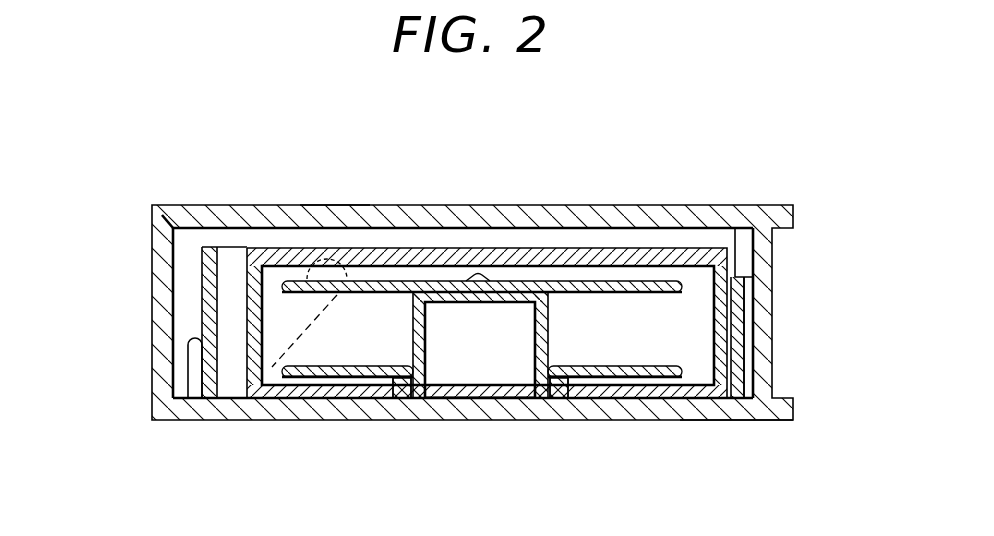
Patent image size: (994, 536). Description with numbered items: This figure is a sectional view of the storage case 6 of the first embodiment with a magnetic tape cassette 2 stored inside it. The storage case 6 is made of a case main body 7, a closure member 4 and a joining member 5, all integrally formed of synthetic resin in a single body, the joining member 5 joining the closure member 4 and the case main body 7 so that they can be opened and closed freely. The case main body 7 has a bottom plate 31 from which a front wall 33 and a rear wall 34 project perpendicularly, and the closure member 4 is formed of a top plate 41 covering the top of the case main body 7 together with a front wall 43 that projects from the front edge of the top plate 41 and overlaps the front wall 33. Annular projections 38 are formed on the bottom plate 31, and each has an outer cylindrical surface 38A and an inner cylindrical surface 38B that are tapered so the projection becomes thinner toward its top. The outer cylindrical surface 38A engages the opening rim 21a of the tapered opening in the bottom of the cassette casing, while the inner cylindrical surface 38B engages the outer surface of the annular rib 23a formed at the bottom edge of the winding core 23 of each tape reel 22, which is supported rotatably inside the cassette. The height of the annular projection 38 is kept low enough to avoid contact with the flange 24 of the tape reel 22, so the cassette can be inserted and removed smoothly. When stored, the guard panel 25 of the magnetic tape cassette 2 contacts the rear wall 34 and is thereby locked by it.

The magnetic tape cassette 2 is at (697, 248).
The closure member 4 is at (405, 205).
The joining member 5 is at (150, 232).
The storage case 6 is at (485, 206).
The case main body 7 is at (735, 422).
The opening rim 21a is at (388, 385).
The tape reel 22 is at (606, 279).
The winding core 23 is at (424, 338).
The annular rib 23a is at (440, 398).
The flange 24 is at (346, 368).
The guard panel 25 is at (205, 318).
The bottom plate 31 is at (308, 408).
The front wall 33 is at (735, 358).
The rear wall 34 is at (185, 370).
The annular projection 38 is at (400, 398).
The outer cylindrical surface 38A is at (397, 382).
The inner cylindrical surface 38B is at (405, 382).
The top plate 41 is at (335, 205).
The front wall of the closure member 43 is at (773, 292).